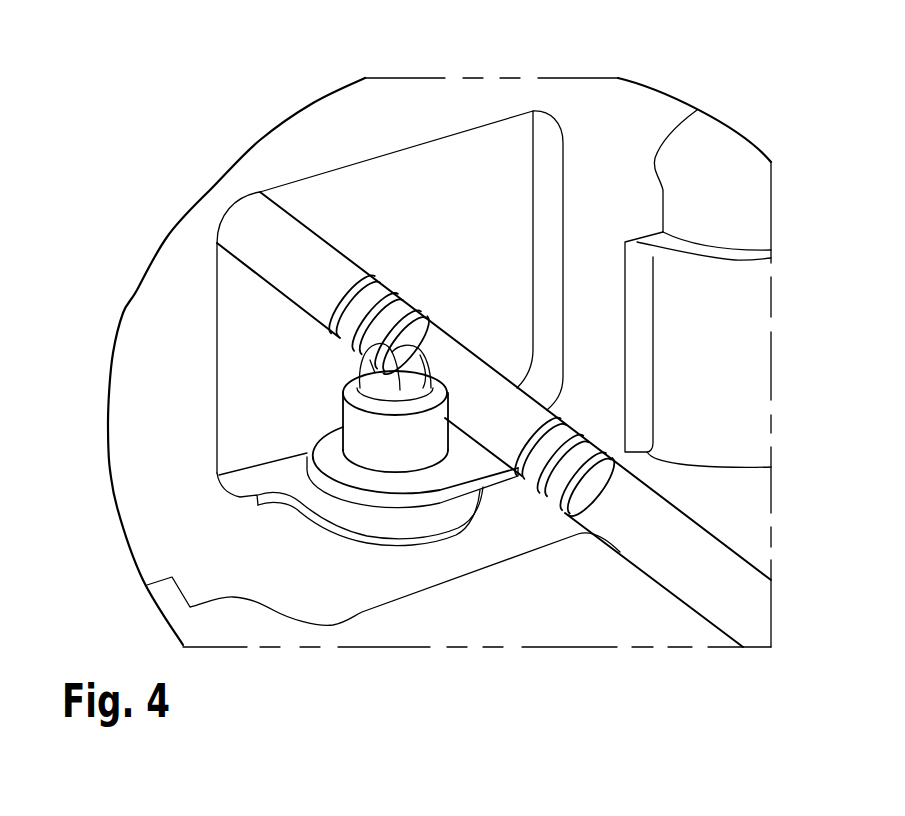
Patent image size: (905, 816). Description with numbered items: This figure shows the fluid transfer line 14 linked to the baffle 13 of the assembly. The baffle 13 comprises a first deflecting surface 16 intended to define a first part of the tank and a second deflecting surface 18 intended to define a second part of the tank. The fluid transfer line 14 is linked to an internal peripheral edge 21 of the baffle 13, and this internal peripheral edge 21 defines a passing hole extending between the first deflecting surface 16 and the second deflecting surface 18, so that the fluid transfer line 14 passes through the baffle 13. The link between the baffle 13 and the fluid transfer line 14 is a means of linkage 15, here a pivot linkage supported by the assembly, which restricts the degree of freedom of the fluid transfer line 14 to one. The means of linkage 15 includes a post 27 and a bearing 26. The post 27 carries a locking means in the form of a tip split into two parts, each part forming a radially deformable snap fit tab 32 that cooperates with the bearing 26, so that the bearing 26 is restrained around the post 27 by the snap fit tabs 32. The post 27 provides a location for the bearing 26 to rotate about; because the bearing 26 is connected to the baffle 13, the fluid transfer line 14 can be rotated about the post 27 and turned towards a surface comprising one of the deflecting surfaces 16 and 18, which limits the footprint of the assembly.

The baffle 13 is at (667, 88).
The fluid transfer line 14 is at (700, 502).
The means of linkage 15 is at (305, 408).
The first deflecting surface 16 is at (638, 213).
The second deflecting surface 18 is at (533, 203).
The internal peripheral edge 21 is at (278, 473).
The bearing 26 is at (353, 438).
The post 27 is at (332, 385).
The snap fit tab 32 is at (345, 316).